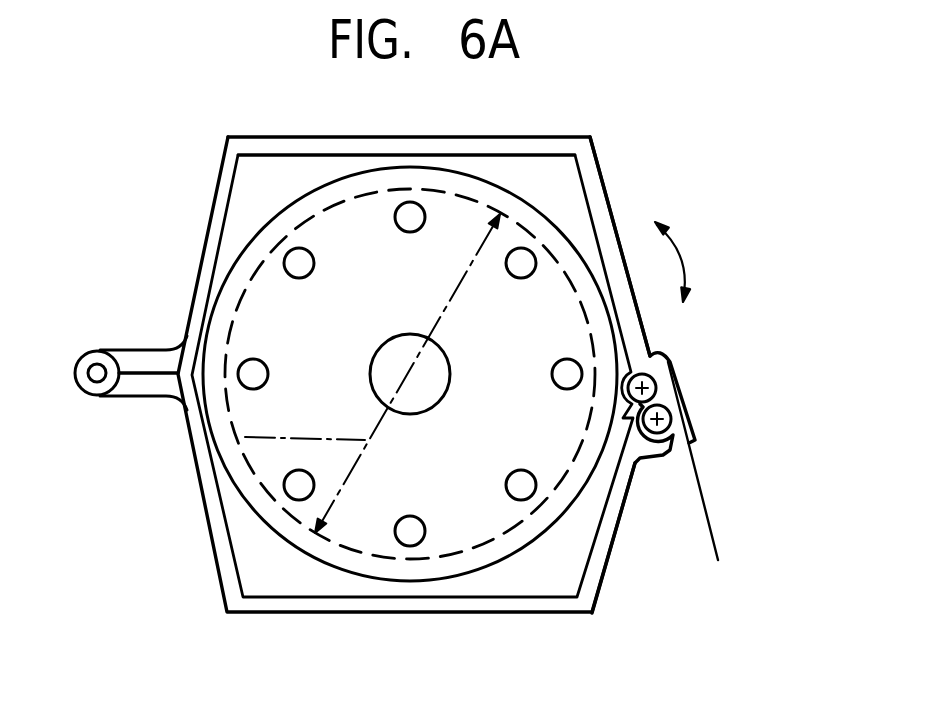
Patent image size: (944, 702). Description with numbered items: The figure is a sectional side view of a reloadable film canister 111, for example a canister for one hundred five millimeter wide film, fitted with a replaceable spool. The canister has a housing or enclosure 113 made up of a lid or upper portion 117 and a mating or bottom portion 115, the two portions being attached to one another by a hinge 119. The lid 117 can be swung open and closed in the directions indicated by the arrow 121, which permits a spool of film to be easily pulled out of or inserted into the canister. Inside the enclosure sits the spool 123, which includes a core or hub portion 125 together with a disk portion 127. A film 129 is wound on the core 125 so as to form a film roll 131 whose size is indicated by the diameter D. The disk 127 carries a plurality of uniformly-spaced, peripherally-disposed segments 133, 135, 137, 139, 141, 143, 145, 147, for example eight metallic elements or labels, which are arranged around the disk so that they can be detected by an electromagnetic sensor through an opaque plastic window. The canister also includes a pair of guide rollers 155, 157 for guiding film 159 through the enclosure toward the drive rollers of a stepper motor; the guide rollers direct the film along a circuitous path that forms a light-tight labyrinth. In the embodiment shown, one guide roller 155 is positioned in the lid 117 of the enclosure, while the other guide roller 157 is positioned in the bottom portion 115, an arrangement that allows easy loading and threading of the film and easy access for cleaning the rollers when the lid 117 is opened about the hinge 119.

The reloadable film canister 111 is at (432, 103).
The housing 113 is at (205, 224).
The mating portion 115 is at (612, 545).
The lid 117 is at (610, 192).
The hinge 119 is at (97, 372).
The arrow 121 is at (683, 256).
The spool 123 is at (537, 170).
The core portion 125 is at (378, 348).
The disk portion 127 is at (286, 202).
The film 129 is at (525, 548).
The film roll 131 is at (487, 513).
The segment 133 is at (424, 205).
The segment 135 is at (519, 247).
The segment 137 is at (571, 392).
The segment 139 is at (487, 517).
The segment 141 is at (428, 543).
The segment 143 is at (296, 470).
The segment 145 is at (253, 358).
The segment 147 is at (310, 250).
The guide roller 155 is at (658, 376).
The guide roller 157 is at (668, 418).
The film 159 is at (695, 488).
The diameter D is at (245, 437).